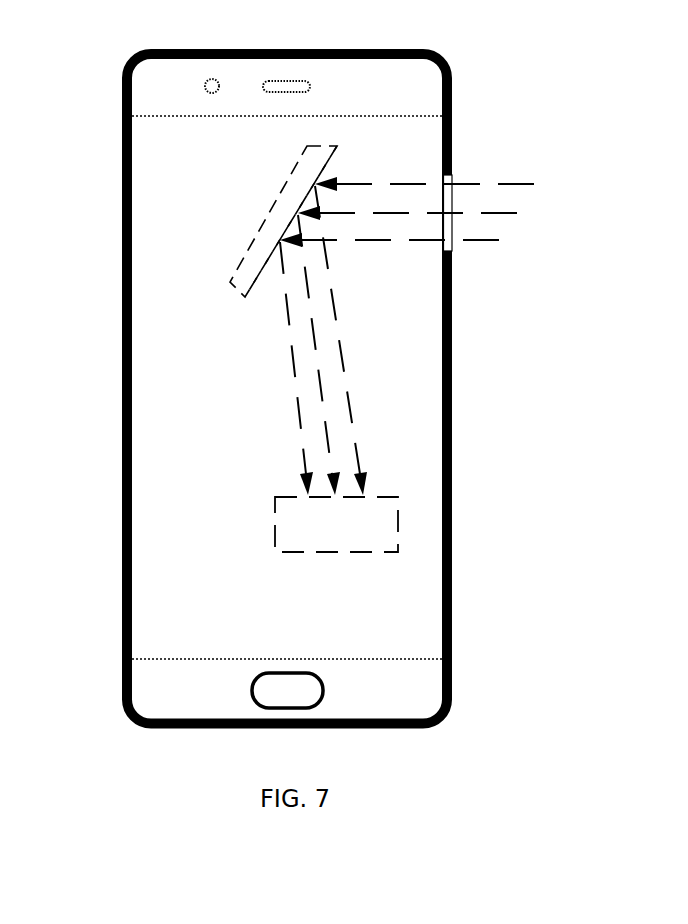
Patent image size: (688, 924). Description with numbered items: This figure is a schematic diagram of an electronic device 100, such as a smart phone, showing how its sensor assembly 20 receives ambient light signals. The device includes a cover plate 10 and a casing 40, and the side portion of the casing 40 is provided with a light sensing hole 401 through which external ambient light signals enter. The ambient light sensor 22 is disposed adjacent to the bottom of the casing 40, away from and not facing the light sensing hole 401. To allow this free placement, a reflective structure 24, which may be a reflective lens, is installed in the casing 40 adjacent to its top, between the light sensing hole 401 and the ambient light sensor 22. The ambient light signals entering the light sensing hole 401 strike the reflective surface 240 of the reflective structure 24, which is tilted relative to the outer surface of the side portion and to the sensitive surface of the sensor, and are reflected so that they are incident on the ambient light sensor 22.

The electronic device 100 is at (103, 421).
The cover plate 10 is at (151, 76).
The sensor assembly 20 is at (418, 384).
The ambient light sensor 22 is at (277, 537).
The reflective structure 24 is at (288, 177).
The reflective surface 240 is at (258, 233).
The casing 40 is at (453, 584).
The light sensing hole 401 is at (450, 176).